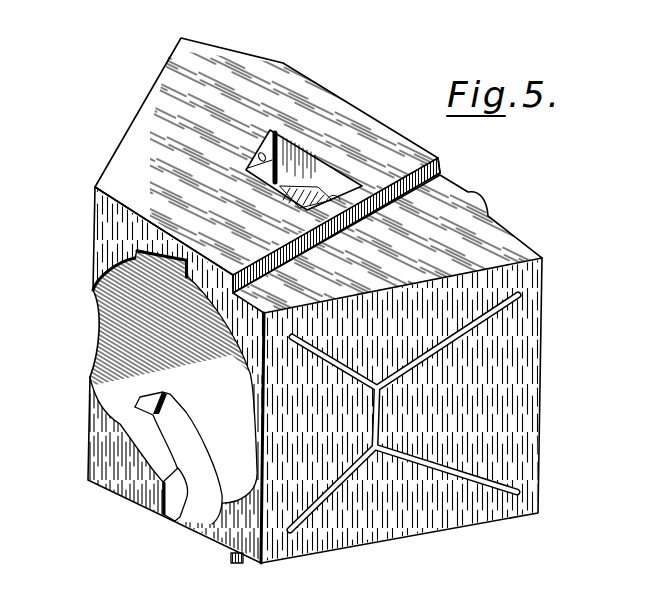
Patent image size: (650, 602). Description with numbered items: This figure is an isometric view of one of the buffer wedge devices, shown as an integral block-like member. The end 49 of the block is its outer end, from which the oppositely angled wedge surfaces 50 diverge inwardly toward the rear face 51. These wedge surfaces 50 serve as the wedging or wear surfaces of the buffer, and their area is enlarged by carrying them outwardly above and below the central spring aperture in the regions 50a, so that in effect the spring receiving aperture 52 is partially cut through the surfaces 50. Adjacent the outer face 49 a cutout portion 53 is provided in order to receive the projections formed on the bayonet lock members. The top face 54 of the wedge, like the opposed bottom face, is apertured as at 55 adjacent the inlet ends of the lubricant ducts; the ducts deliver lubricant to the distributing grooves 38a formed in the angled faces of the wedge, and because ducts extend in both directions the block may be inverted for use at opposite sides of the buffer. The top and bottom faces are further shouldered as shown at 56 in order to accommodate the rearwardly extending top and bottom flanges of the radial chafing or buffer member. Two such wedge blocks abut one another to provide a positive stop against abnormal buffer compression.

The distributing grooves 38a is at (462, 474).
The end of the block 49 is at (115, 483).
The wedge surfaces 50 is at (134, 119).
The regions of the wedging surfaces 50a is at (253, 383).
The rear face 51 is at (380, 121).
The spring receiving aperture 52 is at (122, 420).
The cutout portion 53 is at (187, 500).
The top face 54 is at (277, 80).
The aperture 55 is at (299, 148).
The shoulders 56 is at (442, 175).